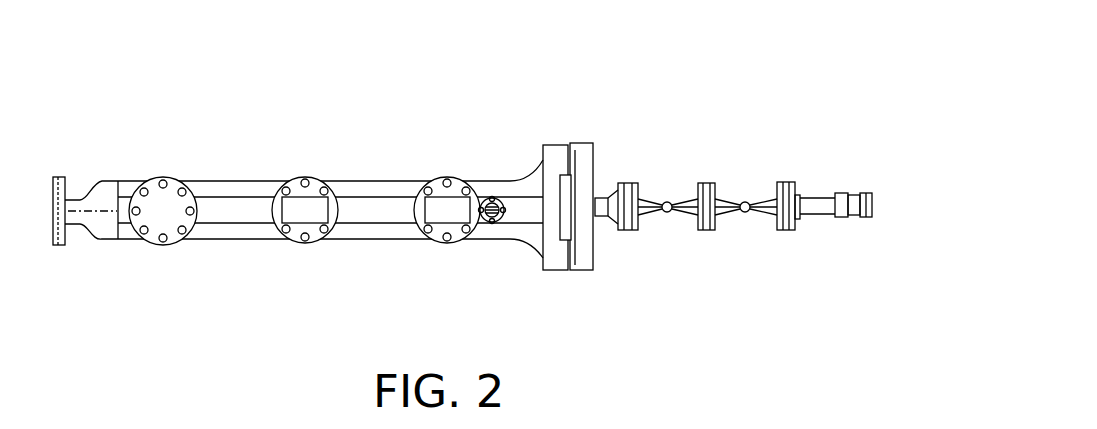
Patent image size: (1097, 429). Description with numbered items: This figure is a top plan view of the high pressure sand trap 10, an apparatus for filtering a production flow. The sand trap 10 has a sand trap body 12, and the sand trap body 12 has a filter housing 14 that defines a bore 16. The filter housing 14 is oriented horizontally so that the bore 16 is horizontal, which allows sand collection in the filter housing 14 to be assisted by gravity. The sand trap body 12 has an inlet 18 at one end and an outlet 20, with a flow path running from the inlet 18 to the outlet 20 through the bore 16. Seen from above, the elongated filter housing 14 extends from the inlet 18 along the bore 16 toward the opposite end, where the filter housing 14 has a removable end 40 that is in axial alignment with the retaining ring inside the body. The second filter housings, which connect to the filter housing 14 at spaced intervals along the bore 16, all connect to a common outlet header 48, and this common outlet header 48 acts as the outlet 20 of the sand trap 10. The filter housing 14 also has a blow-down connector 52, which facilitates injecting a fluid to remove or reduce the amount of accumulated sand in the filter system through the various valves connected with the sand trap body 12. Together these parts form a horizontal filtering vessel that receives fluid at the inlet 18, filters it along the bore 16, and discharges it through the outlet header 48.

The high pressure sand trap 10 is at (752, 90).
The sand trap body 12 is at (388, 228).
The filter housing 14 is at (230, 228).
The bore 16 is at (255, 181).
The inlet 18 is at (61, 212).
The outlet 20 is at (565, 187).
The removable end 40 is at (582, 233).
The common outlet header 48 is at (378, 210).
The blow-down connector 52 is at (705, 217).